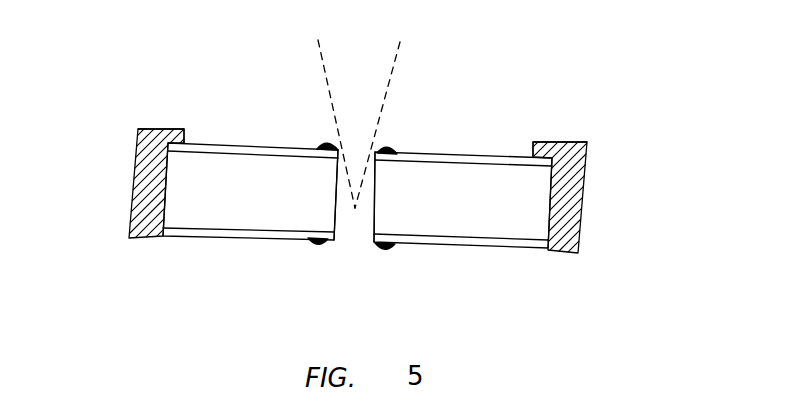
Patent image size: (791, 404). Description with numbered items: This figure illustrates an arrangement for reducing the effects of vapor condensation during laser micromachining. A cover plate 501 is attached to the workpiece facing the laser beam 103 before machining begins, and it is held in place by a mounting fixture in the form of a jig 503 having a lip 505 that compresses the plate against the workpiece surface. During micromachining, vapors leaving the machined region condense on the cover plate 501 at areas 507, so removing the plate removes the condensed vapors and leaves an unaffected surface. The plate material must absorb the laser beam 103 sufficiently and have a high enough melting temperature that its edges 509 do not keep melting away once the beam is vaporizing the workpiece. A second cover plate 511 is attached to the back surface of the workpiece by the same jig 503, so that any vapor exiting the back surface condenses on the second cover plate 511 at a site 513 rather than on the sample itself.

The laser beam 103 is at (384, 85).
The cover plate 501 is at (483, 155).
The jig 503 is at (147, 190).
The lip 505 is at (183, 132).
The areas 507 is at (327, 142).
The edges 509 is at (338, 151).
The second cover plate 511 is at (493, 247).
The site 513 is at (320, 248).